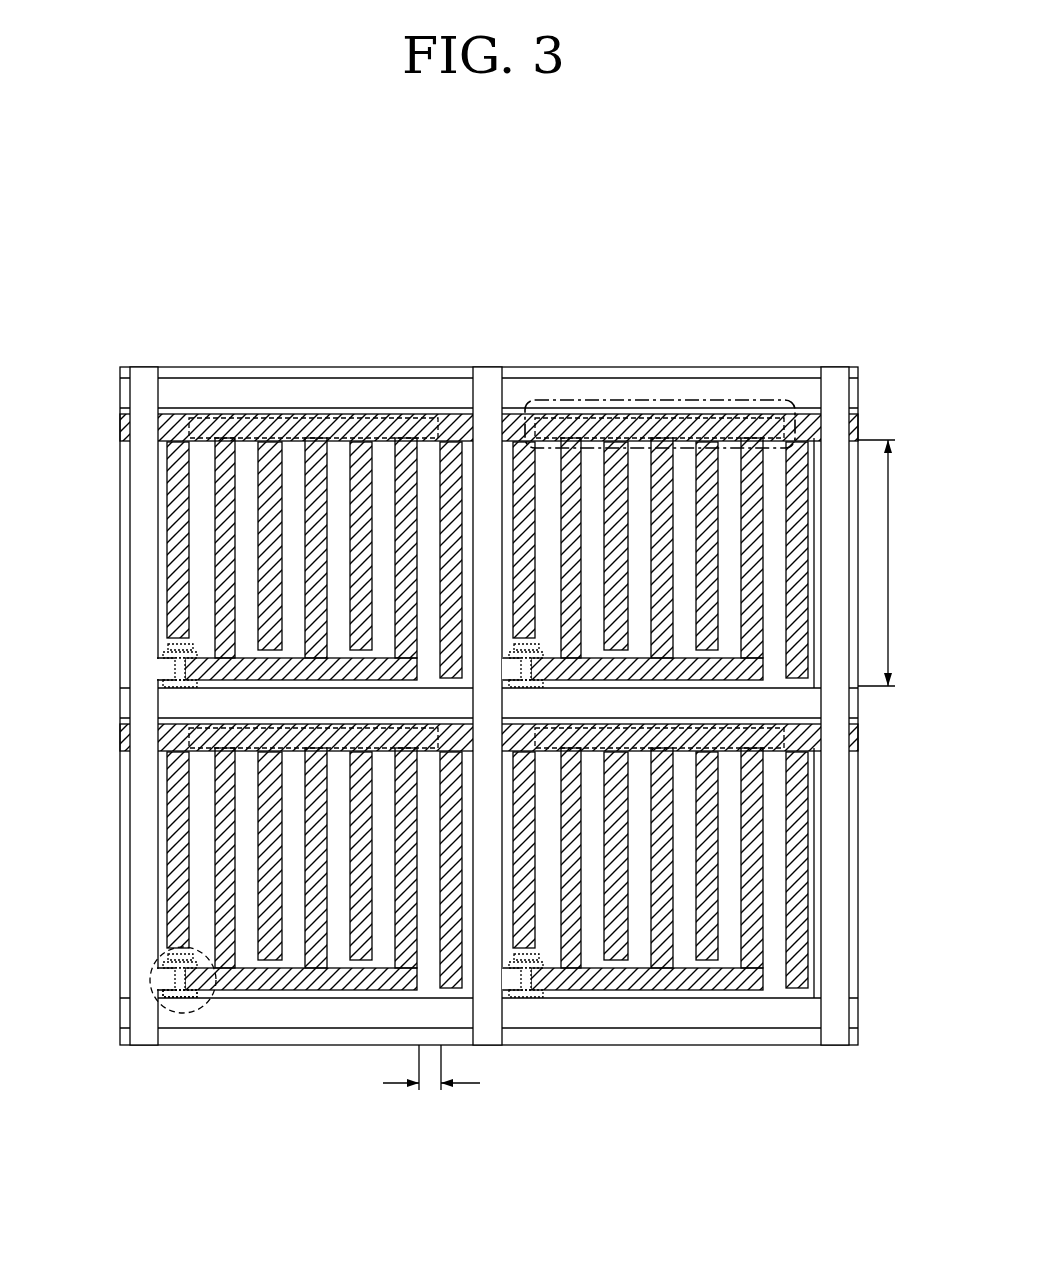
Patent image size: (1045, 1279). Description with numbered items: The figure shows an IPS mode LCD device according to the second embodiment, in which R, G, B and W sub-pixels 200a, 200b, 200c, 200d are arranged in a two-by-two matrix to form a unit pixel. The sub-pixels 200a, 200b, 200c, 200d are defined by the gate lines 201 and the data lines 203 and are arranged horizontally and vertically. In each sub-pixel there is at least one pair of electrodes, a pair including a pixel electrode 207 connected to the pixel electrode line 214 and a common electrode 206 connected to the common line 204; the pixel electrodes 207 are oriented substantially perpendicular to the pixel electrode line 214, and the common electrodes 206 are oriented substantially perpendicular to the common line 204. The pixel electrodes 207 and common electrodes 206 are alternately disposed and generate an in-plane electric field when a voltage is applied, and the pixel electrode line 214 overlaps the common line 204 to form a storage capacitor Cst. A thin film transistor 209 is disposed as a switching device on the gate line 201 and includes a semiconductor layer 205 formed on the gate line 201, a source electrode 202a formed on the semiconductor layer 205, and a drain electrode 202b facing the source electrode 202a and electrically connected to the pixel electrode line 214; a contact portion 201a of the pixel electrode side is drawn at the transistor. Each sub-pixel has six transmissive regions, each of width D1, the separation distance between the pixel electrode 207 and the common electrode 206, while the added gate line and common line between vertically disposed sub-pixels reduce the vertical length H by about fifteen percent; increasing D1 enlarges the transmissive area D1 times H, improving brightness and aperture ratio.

The R sub-pixel 200a is at (257, 963).
The G sub-pixel 200b is at (309, 451).
The B sub-pixel 200c is at (658, 452).
The W sub-pixel 200d is at (657, 1108).
The gate line 201 is at (298, 1020).
The pixel electrode contact portion 201a is at (172, 953).
The source electrode 202a is at (168, 978).
The drain electrode 202b is at (200, 1000).
The data line 203 is at (135, 855).
The common line 204 is at (120, 428).
The semiconductor layer 205 is at (180, 1000).
The common electrode 206 is at (268, 440).
The pixel electrode 207 is at (313, 440).
The thin film transistor 209 is at (141, 1001).
The pixel electrode line 214 is at (400, 440).
The storage capacitor Cst is at (660, 379).
The vertical direction height H is at (883, 563).
The separation distance D1 is at (431, 1082).